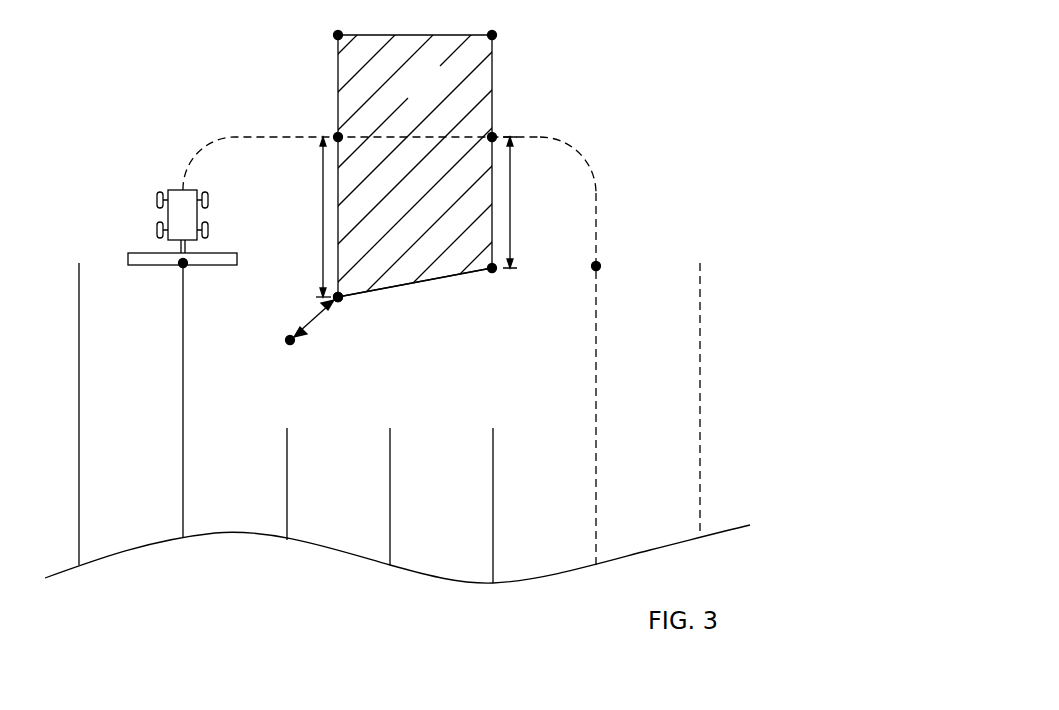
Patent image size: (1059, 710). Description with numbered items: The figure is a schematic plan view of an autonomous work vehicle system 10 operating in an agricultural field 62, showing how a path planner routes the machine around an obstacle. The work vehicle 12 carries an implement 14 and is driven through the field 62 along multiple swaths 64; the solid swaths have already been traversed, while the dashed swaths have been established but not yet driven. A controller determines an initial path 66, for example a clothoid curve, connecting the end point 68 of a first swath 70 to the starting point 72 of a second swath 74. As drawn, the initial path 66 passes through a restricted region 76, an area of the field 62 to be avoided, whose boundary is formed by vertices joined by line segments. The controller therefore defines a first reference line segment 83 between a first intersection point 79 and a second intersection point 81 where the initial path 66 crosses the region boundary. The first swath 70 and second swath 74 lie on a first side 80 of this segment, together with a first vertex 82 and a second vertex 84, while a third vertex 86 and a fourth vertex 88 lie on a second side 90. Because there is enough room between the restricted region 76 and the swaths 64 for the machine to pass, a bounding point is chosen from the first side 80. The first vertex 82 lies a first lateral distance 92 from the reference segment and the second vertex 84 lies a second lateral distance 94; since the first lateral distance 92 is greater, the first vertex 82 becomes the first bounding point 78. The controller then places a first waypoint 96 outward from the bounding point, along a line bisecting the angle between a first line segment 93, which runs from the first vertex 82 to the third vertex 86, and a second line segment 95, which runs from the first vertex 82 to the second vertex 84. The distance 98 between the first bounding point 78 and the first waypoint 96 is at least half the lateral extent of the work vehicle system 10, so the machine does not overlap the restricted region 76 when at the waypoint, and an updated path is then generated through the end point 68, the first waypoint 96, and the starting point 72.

The autonomous work vehicle system 10 is at (152, 237).
The work vehicle 12 is at (190, 210).
The implement 14 is at (164, 268).
The field 62 is at (650, 278).
The swaths 64 is at (81, 420).
The initial path 66 is at (419, 338).
The end point 68 is at (189, 266).
The first swath 70 is at (185, 360).
The starting point 72 is at (599, 264).
The second swath 74 is at (594, 324).
The restricted region 76 is at (398, 202).
The first bounding point 78 is at (344, 302).
The first intersection point 79 is at (334, 134).
The first side 80 is at (573, 170).
The second intersection point 81 is at (496, 134).
The first vertex 82 is at (344, 302).
The first reference line segment 83 is at (418, 135).
The second vertex 84 is at (496, 272).
The third vertex 86 is at (334, 37).
The fourth vertex 88 is at (496, 37).
The second side 90 is at (278, 106).
The first lateral distance 92 is at (298, 217).
The first line segment 93 is at (321, 176).
The second lateral distance 94 is at (512, 206).
The second line segment 95 is at (446, 278).
The first waypoint 96 is at (296, 343).
The distance 98 is at (312, 322).